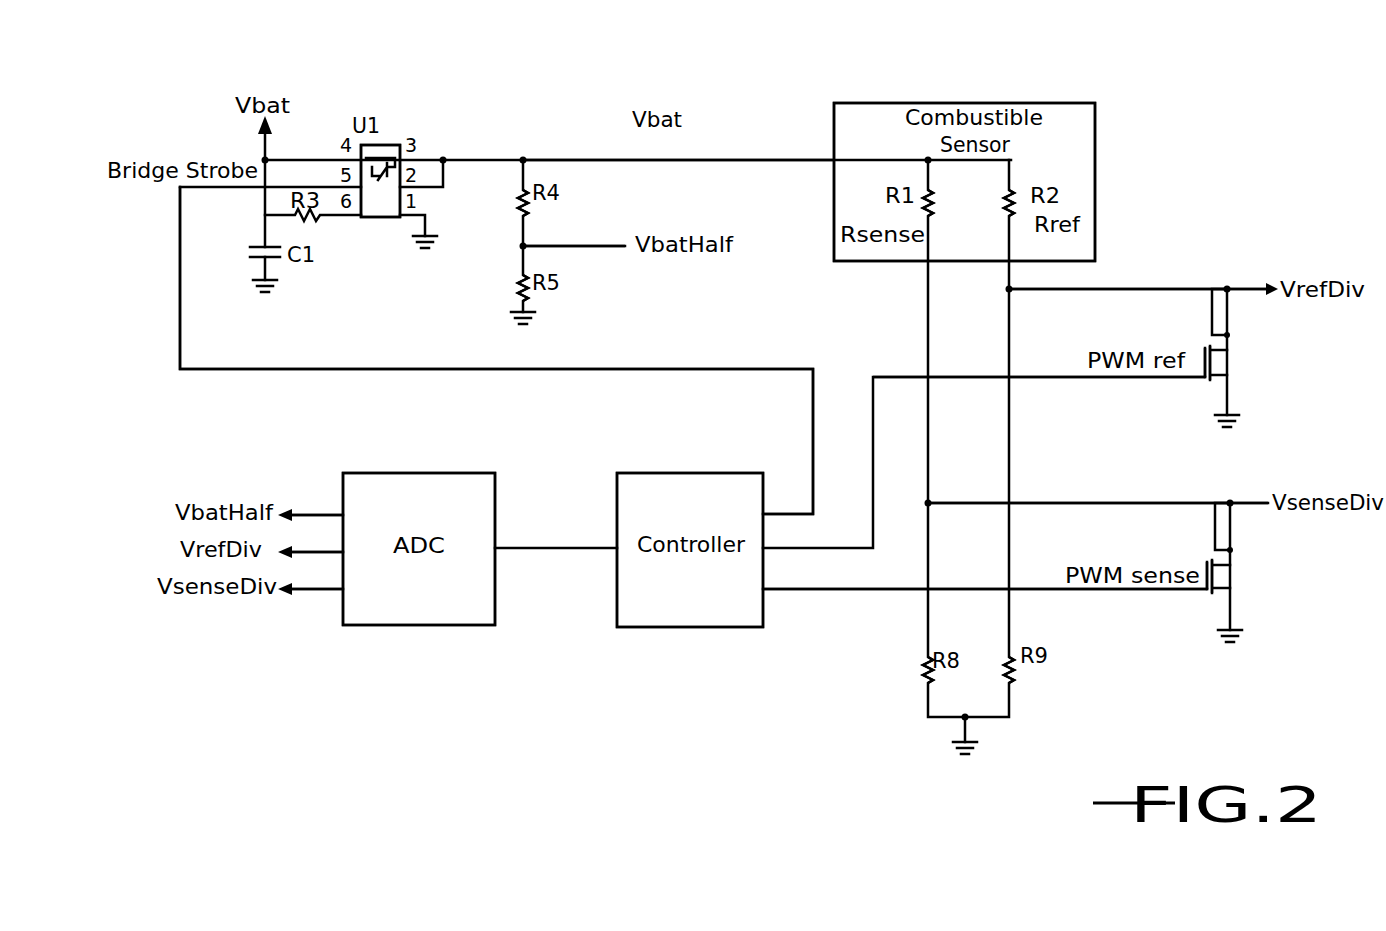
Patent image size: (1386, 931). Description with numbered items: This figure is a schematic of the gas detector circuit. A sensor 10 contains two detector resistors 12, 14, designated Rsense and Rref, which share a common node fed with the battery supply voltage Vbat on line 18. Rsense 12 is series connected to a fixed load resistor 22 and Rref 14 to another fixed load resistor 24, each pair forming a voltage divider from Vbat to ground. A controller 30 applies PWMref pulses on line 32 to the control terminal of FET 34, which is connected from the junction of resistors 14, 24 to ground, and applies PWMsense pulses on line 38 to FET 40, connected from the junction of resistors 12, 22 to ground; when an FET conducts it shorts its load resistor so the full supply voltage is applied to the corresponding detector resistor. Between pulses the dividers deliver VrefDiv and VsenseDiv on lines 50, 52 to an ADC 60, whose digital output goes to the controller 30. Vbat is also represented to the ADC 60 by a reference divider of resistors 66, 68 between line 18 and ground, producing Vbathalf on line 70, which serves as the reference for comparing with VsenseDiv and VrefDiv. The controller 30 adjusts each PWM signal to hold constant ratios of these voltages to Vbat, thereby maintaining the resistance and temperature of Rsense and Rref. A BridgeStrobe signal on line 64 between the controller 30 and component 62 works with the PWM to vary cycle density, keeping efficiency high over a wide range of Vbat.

The sensor 10 is at (1095, 118).
The detector resistor 12 is at (936, 205).
The detector resistor 14 is at (1006, 200).
The line 18 is at (640, 156).
The fixed load resistor 22 is at (923, 668).
The fixed load resistor 24 is at (1014, 673).
The controller 30 is at (680, 473).
The line 32 is at (1043, 376).
The FET 34 is at (1196, 348).
The line 38 is at (1043, 588).
The FET 40 is at (1196, 562).
The line 50 is at (1128, 287).
The line 52 is at (1093, 502).
The ADC 60 is at (425, 473).
The component 62 is at (388, 145).
The line 64 is at (180, 328).
The resistor 66 is at (520, 205).
The resistor 68 is at (520, 295).
The line 70 is at (312, 514).